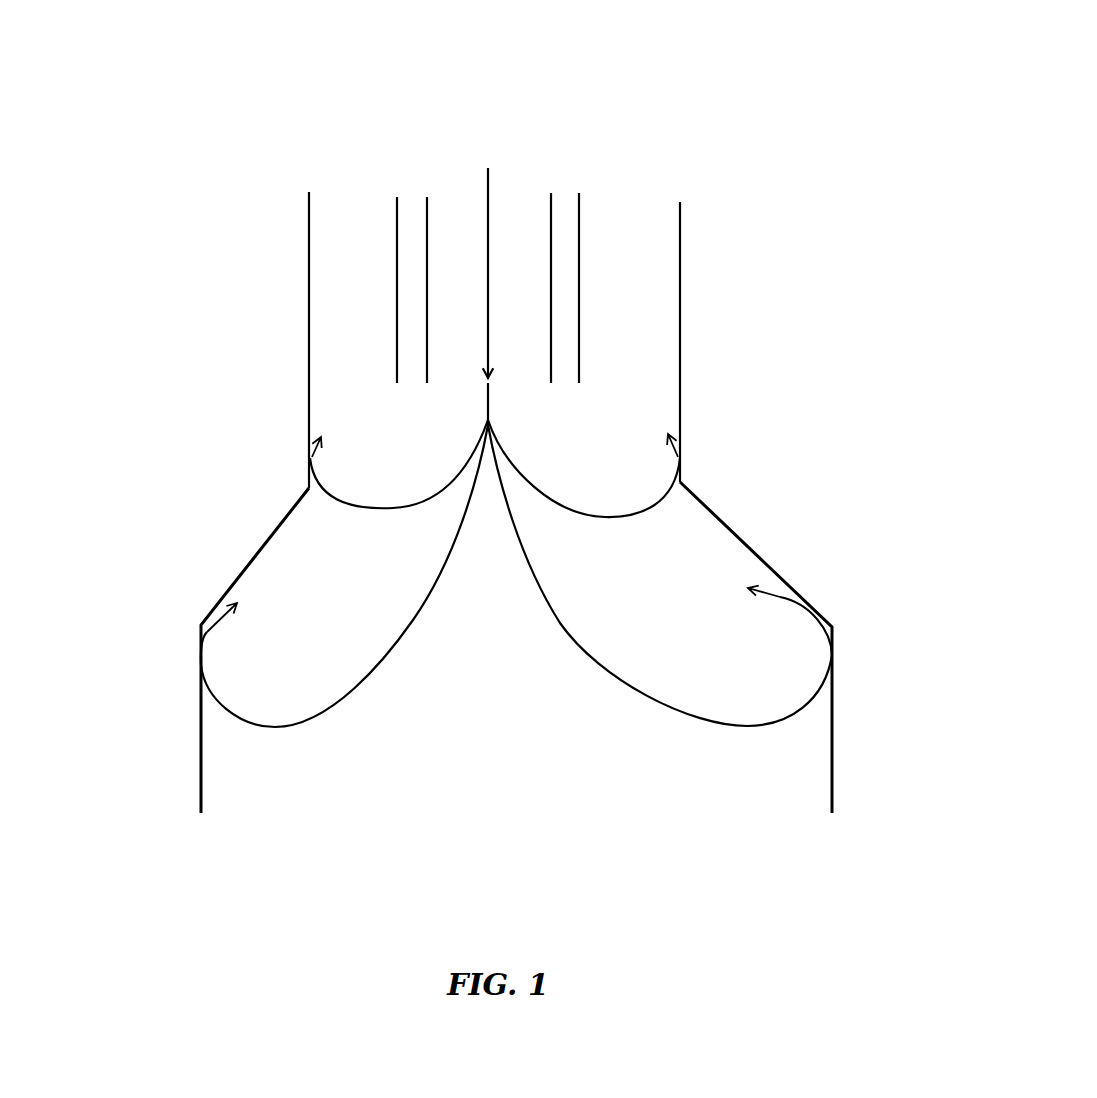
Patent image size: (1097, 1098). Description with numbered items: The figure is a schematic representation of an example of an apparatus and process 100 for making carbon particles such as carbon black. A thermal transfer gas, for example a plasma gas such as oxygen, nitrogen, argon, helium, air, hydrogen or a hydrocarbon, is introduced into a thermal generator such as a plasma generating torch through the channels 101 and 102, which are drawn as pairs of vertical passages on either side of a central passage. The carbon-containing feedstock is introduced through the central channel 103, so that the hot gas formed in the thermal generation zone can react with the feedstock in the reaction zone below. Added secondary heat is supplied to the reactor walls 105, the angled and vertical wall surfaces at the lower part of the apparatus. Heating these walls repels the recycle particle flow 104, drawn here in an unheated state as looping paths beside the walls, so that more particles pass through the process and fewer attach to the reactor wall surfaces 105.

The apparatus 100 is at (720, 50).
The channel 101 is at (405, 180).
The channel 102 is at (457, 202).
The channel 103 is at (492, 276).
The recycle particle flow 104 is at (239, 639).
The reactor walls 105 is at (275, 464).